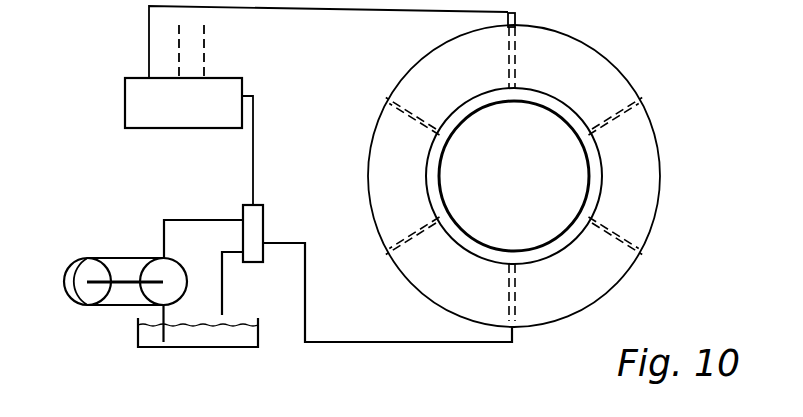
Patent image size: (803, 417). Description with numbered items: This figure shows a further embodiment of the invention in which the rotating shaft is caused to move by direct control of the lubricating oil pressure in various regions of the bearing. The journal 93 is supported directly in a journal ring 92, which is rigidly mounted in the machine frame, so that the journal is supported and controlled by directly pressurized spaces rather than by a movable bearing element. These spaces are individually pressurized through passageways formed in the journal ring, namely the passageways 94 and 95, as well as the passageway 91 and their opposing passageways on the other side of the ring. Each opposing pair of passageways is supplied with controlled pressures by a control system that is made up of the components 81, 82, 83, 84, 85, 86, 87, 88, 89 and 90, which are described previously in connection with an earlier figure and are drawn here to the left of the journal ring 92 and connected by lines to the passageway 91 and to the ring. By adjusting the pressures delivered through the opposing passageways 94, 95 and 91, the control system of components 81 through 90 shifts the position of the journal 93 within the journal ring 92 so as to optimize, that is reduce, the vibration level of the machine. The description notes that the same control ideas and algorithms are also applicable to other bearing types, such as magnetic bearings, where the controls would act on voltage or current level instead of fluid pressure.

The control system component 81 is at (65, 283).
The control system component 82 is at (138, 334).
The control system component 83 is at (168, 318).
The control system component 84 is at (272, 207).
The control system component 85 is at (265, 250).
The control system component 86 is at (149, 36).
The control system component 87 is at (177, 50).
The control system component 88 is at (205, 42).
The control system component 89 is at (135, 102).
The control system component 90 is at (253, 153).
The passageway 91 is at (518, 18).
The journal ring 92 is at (650, 176).
The journal 93 is at (524, 164).
The passageway 94 is at (647, 106).
The passageway 95 is at (642, 252).